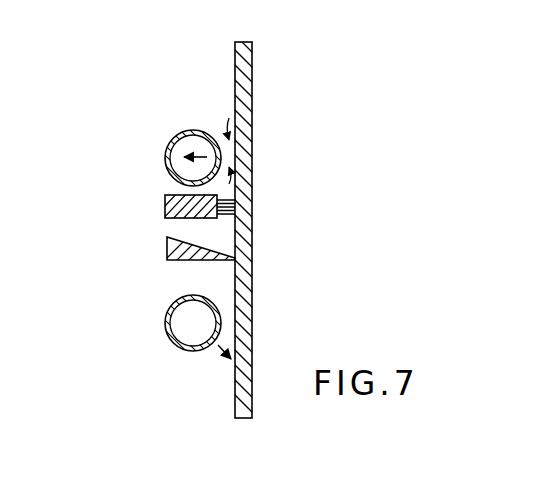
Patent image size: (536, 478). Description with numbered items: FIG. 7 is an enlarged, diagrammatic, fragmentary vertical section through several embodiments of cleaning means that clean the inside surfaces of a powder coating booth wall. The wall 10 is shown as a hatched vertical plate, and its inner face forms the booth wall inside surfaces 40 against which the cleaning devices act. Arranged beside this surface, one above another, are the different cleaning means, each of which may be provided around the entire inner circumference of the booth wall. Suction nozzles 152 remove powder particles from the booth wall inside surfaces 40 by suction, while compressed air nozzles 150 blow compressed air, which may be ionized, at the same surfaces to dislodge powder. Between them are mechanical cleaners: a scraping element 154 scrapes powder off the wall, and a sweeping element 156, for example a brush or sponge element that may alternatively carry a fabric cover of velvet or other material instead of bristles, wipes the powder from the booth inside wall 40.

The plate / wall 10 is at (255, 88).
The booth wall inside surfaces 40 is at (235, 56).
The compressed air nozzles 150 is at (168, 335).
The suction nozzles 152 is at (168, 137).
The scraping elements 154 is at (167, 248).
The sweeping elements 156 is at (165, 205).